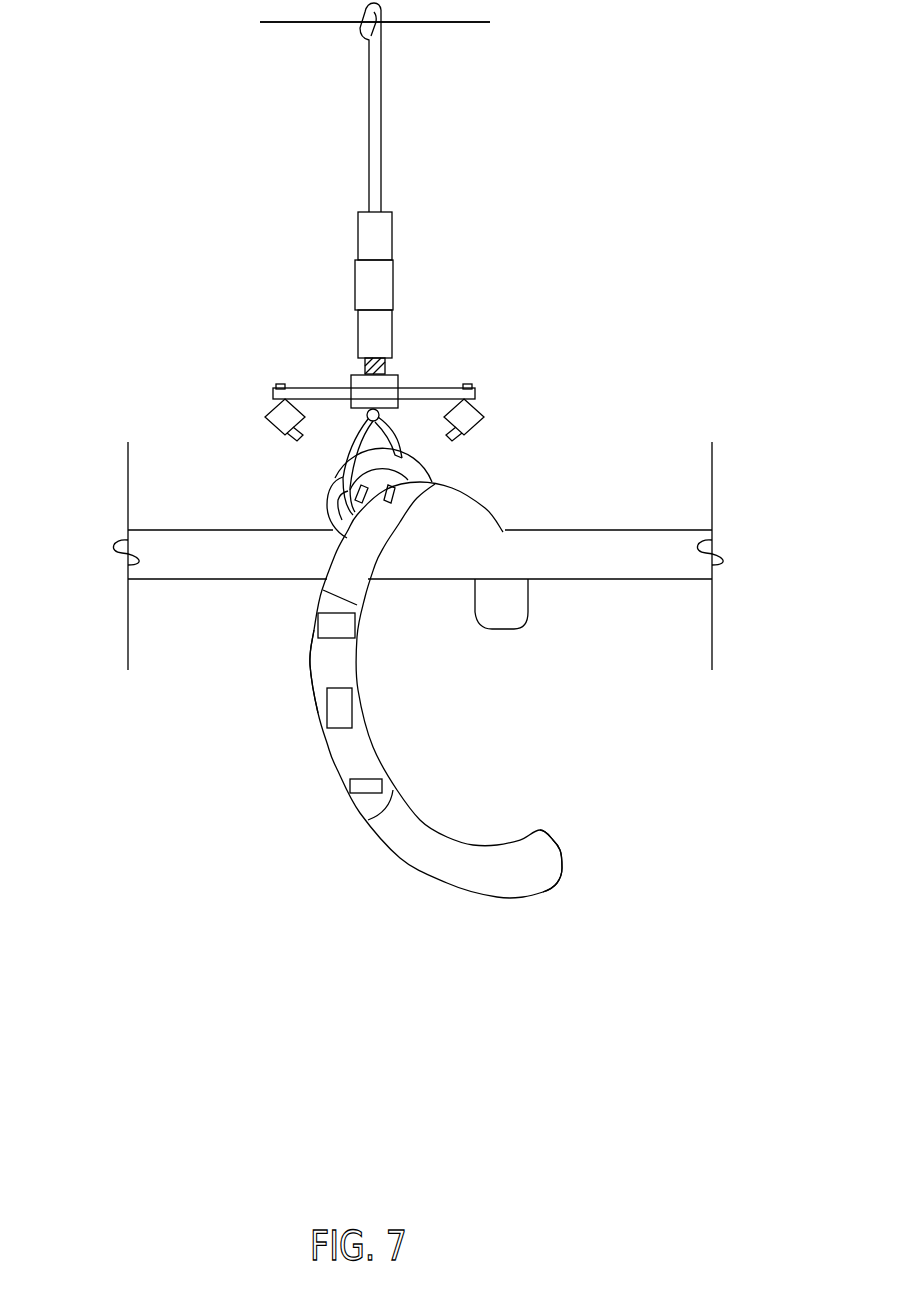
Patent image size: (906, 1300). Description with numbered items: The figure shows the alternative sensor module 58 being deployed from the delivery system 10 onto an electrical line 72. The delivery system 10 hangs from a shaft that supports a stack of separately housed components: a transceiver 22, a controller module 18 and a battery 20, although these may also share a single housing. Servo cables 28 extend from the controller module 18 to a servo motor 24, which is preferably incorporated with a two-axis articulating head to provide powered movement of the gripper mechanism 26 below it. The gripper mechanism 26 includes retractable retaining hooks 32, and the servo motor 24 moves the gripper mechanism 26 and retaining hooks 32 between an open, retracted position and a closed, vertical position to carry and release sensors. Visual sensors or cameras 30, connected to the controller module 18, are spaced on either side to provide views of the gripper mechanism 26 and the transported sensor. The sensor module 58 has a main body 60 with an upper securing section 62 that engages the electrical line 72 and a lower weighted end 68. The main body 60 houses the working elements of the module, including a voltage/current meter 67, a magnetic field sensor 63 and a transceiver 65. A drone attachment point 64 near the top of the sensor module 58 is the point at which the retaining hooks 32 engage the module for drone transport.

The delivery system 10 is at (248, 171).
The controller module 18 is at (377, 300).
The battery 20 is at (380, 343).
The transceiver 22 is at (380, 242).
The servo motor 24 is at (393, 388).
The gripper mechanism 26 is at (400, 446).
The servo cables 28 is at (360, 369).
The visual sensors/cameras 30 is at (265, 418).
The retaining hooks 32 is at (340, 487).
The sensor module 58 is at (380, 550).
The main body 60 is at (327, 650).
The upper securing section 62 is at (512, 613).
The magnetic field sensor 63 is at (355, 640).
The drone attachment point 64 is at (337, 498).
The transceiver 65 is at (350, 788).
The voltage/current meter 67 is at (333, 715).
The lower weighted end 68 is at (543, 870).
The electrical line 72 is at (643, 555).